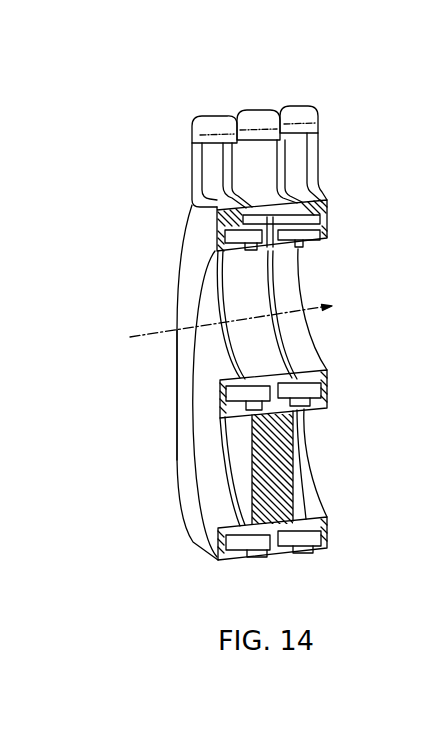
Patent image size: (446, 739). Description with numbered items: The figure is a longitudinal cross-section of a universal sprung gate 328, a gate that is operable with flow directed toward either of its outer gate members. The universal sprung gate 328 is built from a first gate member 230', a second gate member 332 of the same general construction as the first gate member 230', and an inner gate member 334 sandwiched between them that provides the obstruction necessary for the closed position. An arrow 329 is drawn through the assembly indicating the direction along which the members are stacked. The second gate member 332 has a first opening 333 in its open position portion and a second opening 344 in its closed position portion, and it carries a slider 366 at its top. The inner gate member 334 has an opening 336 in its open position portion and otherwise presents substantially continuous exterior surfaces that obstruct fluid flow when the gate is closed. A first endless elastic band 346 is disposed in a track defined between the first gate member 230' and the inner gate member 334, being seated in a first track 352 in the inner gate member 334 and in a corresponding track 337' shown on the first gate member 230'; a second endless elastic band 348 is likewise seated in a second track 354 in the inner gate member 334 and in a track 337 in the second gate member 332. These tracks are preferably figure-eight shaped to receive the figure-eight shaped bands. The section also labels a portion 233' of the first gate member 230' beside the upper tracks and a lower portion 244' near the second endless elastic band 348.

The universal sprung gate 328 is at (103, 228).
The slider 366 is at (296, 102).
The first track 352 is at (235, 222).
The track 337 is at (312, 217).
The insert strip 337' is at (196, 243).
The second track 354 is at (305, 235).
The rail surface 233' is at (182, 404).
The opening 336 is at (258, 333).
The central axis 329 is at (143, 332).
The first opening 333 is at (307, 362).
The first gate member 230' is at (145, 395).
The second gate member 332 is at (328, 395).
The inner gate member 334 is at (290, 458).
The second opening 344 is at (314, 510).
The rail surface 244' is at (184, 471).
The first endless elastic band 346 is at (260, 548).
The second endless elastic band 348 is at (306, 543).